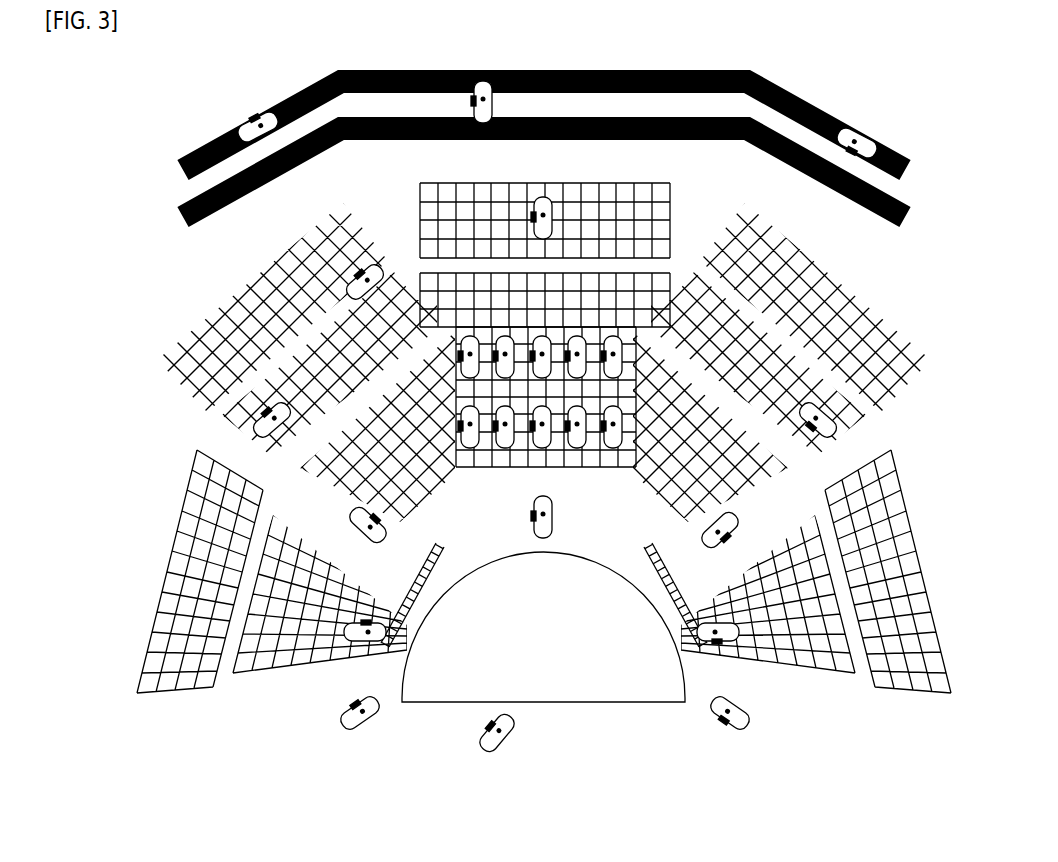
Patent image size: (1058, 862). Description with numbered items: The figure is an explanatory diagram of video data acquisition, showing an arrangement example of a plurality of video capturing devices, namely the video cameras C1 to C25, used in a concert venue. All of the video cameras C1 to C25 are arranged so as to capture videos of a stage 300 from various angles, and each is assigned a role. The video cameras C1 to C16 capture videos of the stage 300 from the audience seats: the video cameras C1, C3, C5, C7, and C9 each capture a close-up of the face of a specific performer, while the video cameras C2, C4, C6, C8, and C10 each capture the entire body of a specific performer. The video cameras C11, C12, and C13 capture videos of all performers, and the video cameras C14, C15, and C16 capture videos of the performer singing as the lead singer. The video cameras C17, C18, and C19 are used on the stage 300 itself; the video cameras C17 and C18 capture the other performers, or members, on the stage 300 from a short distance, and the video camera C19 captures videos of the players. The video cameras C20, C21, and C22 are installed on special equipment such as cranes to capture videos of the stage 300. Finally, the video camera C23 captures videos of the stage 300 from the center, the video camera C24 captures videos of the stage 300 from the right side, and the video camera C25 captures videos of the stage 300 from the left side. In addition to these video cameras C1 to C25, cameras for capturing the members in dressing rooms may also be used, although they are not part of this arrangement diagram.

The video camera C1 is at (452, 420).
The video camera C2 is at (452, 347).
The video camera C3 is at (492, 449).
The video camera C4 is at (492, 339).
The video camera C5 is at (531, 449).
The video camera C6 is at (544, 333).
The video camera C7 is at (591, 449).
The video camera C8 is at (590, 339).
The video camera C9 is at (631, 420).
The video camera C10 is at (632, 347).
The video camera C11 is at (558, 199).
The video camera C12 is at (253, 408).
The video camera C13 is at (835, 406).
The video camera C14 is at (525, 524).
The video camera C15 is at (738, 517).
The video camera C16 is at (353, 515).
The video camera C17 is at (343, 705).
The video camera C18 is at (744, 703).
The video camera C19 is at (483, 757).
The video camera C20 is at (737, 619).
The video camera C21 is at (342, 618).
The video camera C22 is at (343, 265).
The video camera C23 is at (497, 85).
The video camera C24 is at (241, 112).
The video camera C25 is at (873, 127).
The stage 300 is at (543, 648).